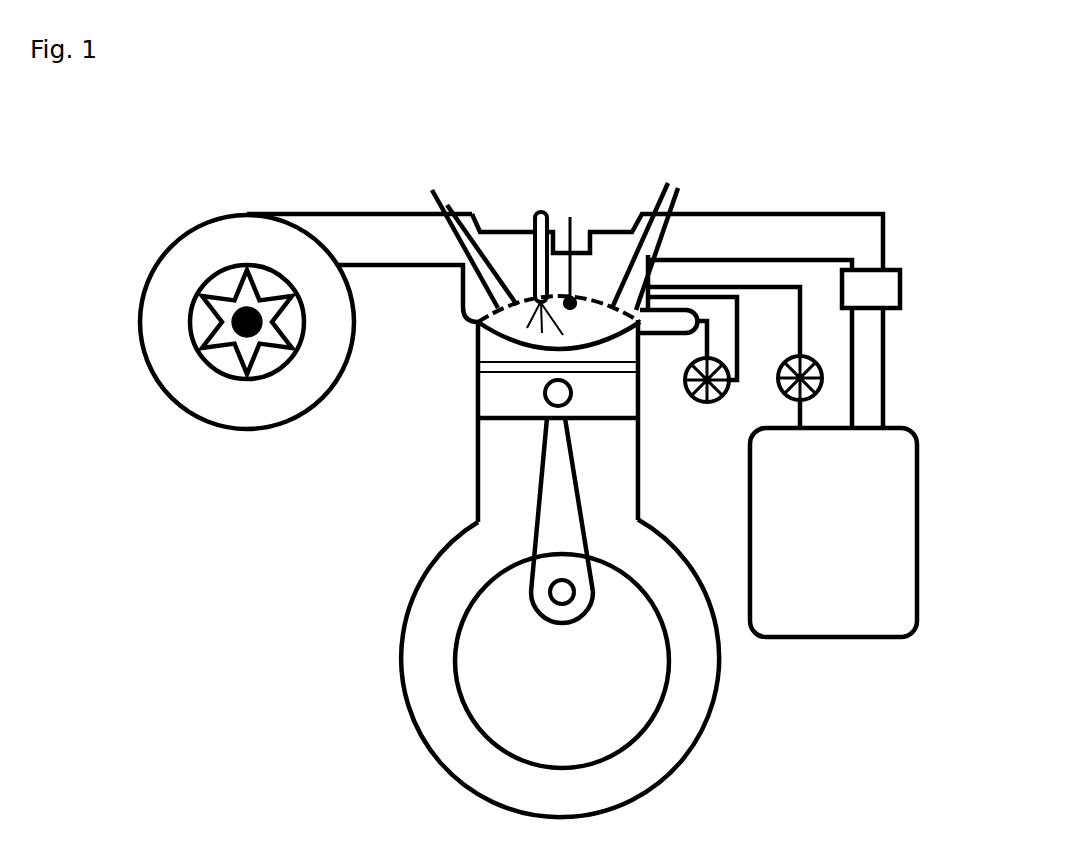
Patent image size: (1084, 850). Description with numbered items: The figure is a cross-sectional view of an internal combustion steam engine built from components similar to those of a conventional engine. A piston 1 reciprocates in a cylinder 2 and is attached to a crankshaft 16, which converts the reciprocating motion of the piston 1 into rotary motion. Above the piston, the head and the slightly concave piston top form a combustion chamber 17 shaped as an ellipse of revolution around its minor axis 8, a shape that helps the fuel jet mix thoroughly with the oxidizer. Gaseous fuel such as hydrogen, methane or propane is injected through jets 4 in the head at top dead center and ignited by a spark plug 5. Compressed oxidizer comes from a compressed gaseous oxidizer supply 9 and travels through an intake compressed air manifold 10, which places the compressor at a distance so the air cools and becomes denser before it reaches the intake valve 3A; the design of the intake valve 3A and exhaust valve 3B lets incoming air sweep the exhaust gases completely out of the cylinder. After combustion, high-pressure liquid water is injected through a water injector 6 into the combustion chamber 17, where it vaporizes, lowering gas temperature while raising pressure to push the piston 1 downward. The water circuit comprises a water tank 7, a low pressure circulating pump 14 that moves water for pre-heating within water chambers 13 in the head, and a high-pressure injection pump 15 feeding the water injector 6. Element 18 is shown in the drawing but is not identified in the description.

The piston 1 is at (492, 385).
The cylinder 2 is at (477, 482).
The intake valve 3A is at (447, 207).
The exhaust valve 3B is at (673, 188).
The fuel injection jet 4 is at (538, 207).
The spark plug 5 is at (572, 207).
The water injector 6 is at (663, 325).
The water tank 7 is at (883, 500).
The minor axis of combustion chamber ellipse 8 is at (540, 349).
The compressed gaseous oxidizer supply 9 is at (175, 255).
The intake compressed air manifold 10 is at (365, 237).
The water chambers 13 is at (474, 296).
The low pressure circulating pump 14 is at (812, 360).
The high-pressure injection pump 15 is at (706, 403).
The crankshaft 16 is at (502, 690).
The combustion chamber 17 is at (510, 317).
The pump / control unit 18 is at (887, 282).